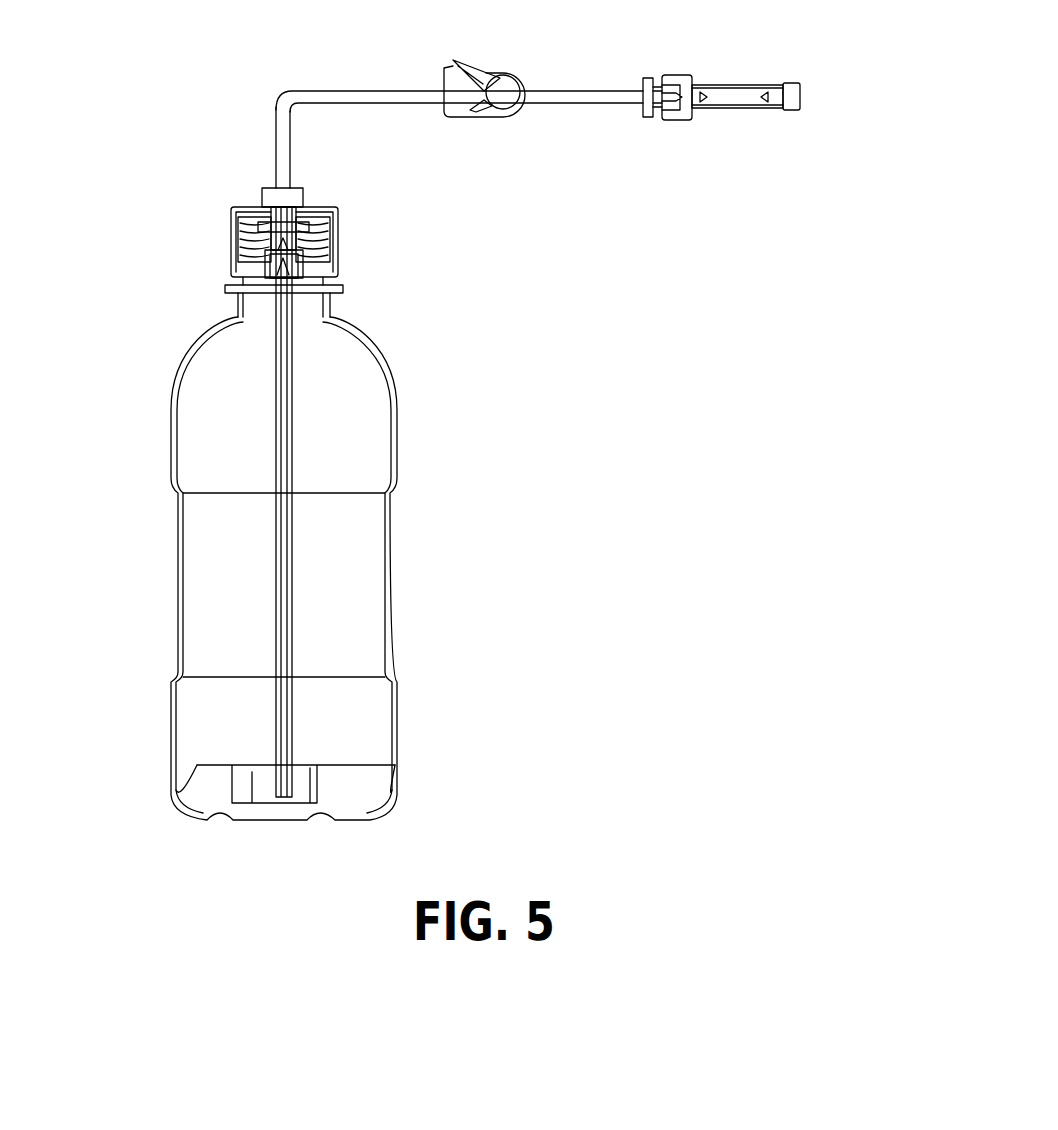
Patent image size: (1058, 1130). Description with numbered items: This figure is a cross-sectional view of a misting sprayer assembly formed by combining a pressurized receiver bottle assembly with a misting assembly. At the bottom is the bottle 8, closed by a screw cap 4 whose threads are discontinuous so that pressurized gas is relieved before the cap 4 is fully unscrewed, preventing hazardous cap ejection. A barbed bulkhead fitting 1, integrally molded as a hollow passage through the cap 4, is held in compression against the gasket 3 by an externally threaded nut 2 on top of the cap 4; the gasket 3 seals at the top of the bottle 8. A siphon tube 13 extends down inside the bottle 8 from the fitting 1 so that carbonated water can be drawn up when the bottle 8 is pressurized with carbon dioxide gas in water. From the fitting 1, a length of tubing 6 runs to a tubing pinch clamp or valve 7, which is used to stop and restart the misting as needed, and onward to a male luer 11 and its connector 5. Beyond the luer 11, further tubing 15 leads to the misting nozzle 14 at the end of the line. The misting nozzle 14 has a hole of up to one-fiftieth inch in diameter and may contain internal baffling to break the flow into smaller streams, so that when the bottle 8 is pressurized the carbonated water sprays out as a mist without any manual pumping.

The barbed bulkhead fitting 1 is at (277, 203).
The nut 2 is at (303, 200).
The gasket 3 is at (238, 218).
The cap 4 is at (338, 240).
The luer connector 5 is at (650, 117).
The tube 6 is at (572, 88).
The tubing pinch clamp or valve 7 is at (480, 118).
The bottle 8 is at (398, 432).
The male luer 11 is at (270, 273).
The siphon tube 13 is at (278, 437).
The misting nozzle 14 is at (790, 75).
The tubing 15 is at (732, 112).